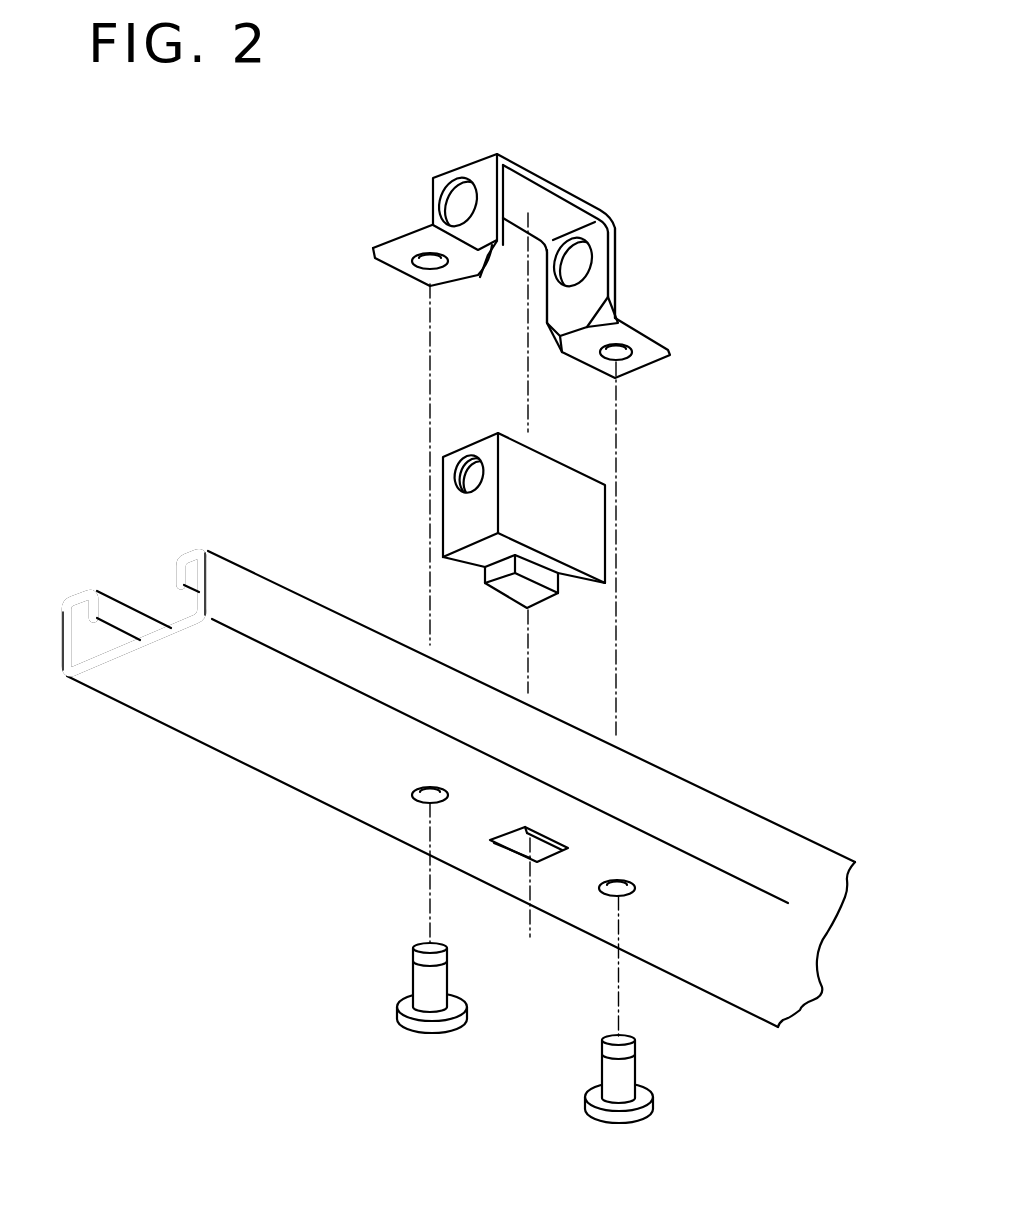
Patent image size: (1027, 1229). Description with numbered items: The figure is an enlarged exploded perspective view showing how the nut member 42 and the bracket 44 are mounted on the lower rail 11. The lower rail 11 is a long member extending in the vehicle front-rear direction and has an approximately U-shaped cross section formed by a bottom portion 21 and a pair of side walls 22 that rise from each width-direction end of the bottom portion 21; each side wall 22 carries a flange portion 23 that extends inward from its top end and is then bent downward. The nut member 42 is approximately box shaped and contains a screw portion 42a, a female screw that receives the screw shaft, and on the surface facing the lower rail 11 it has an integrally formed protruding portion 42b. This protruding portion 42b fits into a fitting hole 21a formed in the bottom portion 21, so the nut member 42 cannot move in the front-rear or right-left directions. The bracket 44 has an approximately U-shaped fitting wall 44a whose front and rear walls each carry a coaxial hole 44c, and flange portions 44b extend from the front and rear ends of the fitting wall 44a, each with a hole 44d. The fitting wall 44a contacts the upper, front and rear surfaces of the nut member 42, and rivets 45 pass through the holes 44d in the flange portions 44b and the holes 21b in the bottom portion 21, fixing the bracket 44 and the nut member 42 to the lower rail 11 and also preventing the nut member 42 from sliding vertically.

The lower rail 11 is at (748, 808).
The bottom portion 21 is at (128, 655).
The fitting hole 21a is at (512, 840).
The holes 21b is at (425, 792).
The side walls 22 is at (218, 572).
The flange portion 23 is at (175, 570).
The nut member 42 is at (593, 515).
The screw portion 42a is at (458, 481).
The protruding portion 42b is at (508, 592).
The bracket 44 is at (580, 188).
The fitting wall 44a is at (617, 233).
The flange portions 44b is at (402, 237).
The hole 44c is at (447, 202).
The hole 44d is at (420, 264).
The rivet 45 is at (418, 978).